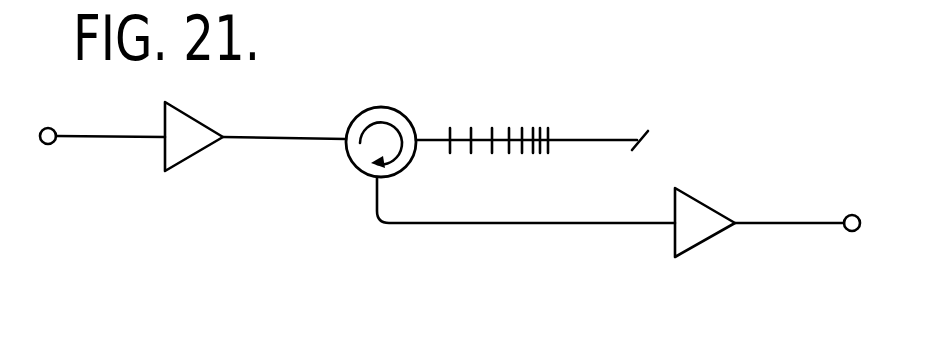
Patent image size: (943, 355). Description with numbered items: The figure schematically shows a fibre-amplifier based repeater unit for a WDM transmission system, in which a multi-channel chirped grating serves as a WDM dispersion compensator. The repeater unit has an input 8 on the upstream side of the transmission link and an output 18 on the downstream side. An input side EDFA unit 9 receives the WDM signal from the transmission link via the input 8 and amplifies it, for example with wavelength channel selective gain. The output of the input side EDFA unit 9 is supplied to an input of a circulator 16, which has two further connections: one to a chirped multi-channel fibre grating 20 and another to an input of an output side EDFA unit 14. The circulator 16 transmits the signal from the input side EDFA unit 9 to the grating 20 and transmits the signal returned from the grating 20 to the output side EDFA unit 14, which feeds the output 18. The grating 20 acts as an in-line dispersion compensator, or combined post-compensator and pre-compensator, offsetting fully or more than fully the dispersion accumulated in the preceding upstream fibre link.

The input 8 is at (51, 144).
The input side EDFA unit 9 is at (193, 155).
The circulator 16 is at (358, 120).
The chirped multi-channel fibre grating 20 is at (497, 128).
The output side EDFA unit 14 is at (703, 243).
The output 18 is at (852, 231).